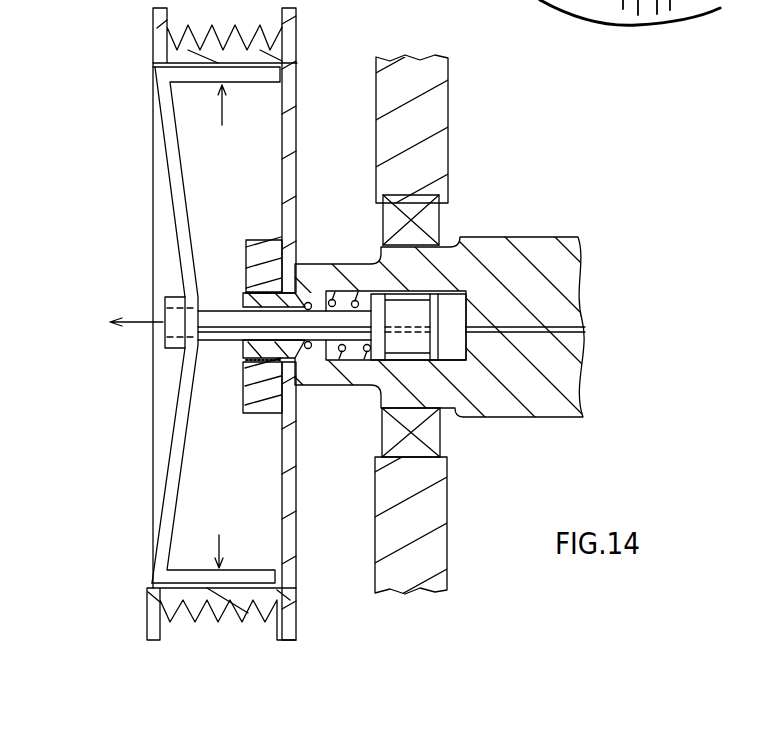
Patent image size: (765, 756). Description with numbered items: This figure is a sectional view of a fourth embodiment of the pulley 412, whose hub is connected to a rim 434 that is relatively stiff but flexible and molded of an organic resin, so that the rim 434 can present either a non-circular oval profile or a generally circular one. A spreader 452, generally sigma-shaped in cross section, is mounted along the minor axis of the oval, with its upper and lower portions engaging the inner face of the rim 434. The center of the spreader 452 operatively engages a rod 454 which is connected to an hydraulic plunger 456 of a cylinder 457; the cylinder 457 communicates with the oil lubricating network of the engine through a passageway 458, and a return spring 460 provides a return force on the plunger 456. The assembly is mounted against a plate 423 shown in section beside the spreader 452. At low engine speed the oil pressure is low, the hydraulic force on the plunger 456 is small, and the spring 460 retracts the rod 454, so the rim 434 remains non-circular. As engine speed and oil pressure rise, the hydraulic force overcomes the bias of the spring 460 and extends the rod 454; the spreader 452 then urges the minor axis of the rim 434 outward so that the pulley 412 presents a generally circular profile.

The pulley 412 is at (153, 163).
The mounting plate 423 is at (297, 123).
The rim 434 is at (155, 36).
The spreader 452 is at (172, 415).
The rod 454 is at (222, 332).
The hydraulic plunger 456 is at (488, 412).
The cylinder 457 is at (450, 285).
The passageway 458 is at (578, 330).
The return spring 460 is at (348, 290).